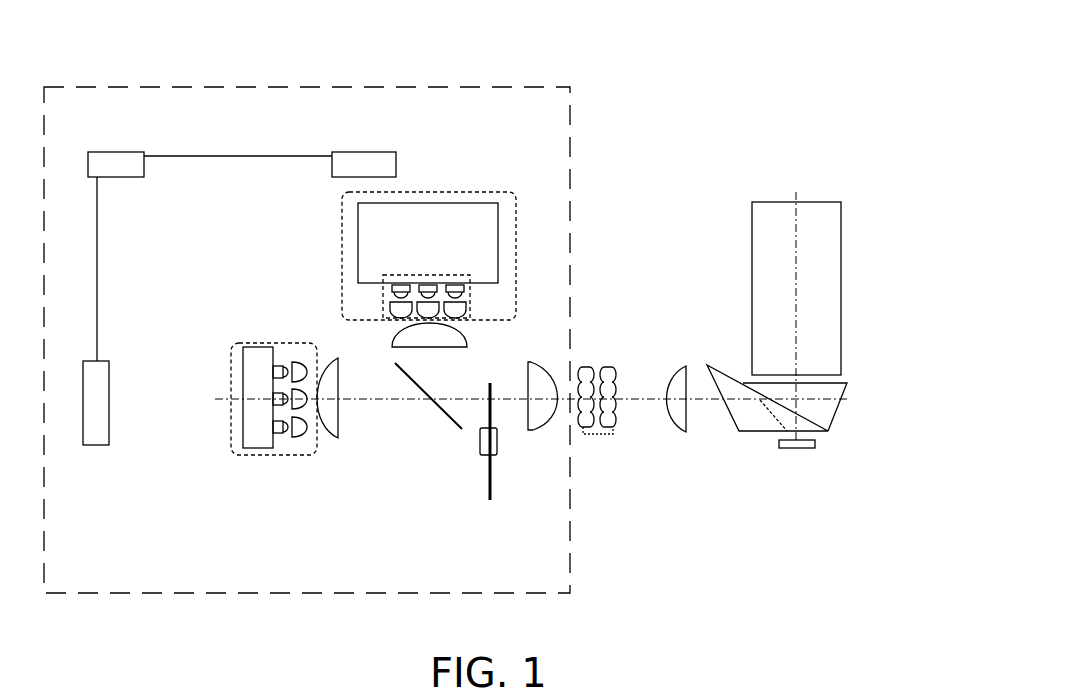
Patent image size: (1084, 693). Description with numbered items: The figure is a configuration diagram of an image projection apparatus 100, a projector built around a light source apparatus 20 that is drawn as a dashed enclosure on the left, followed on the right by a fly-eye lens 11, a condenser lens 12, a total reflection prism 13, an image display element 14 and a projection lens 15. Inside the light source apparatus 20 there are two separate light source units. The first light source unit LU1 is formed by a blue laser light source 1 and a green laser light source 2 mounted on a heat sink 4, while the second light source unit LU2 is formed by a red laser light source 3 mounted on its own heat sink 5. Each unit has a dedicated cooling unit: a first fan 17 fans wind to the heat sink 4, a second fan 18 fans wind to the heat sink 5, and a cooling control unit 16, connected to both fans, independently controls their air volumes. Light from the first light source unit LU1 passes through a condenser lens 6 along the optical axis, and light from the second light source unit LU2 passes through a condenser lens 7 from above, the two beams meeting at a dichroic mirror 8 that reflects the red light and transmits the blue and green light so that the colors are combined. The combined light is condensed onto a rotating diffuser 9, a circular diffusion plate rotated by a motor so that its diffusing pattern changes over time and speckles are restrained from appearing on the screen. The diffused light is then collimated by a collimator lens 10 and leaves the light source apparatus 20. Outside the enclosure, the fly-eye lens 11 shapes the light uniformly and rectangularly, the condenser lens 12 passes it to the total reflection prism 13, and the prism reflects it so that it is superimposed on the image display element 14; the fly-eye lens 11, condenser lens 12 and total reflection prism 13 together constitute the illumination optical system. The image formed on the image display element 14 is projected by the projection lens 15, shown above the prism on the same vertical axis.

The blue laser light source 1 is at (237, 405).
The green laser light source 2 is at (273, 370).
The red laser light source 3 is at (383, 297).
The heat sink 4 is at (258, 348).
The heat sink 5 is at (382, 212).
The condenser lens 6 is at (336, 358).
The condenser lens 7 is at (470, 345).
The dichroic mirror 8 is at (440, 417).
The rotating diffuser 9 is at (490, 500).
The collimator lens 10 is at (540, 430).
The fly-eye lens 11 is at (598, 434).
The condenser lens 12 is at (686, 366).
The total reflection prism 13 is at (738, 432).
The image display element 14 is at (815, 448).
The projection lens 15 is at (842, 290).
The cooling control unit 16 is at (112, 152).
The first fan 17 is at (96, 445).
The second fan 18 is at (342, 151).
The light source apparatus 20 is at (386, 87).
The image projection apparatus 100 is at (963, 153).
The first light source unit LU1 is at (305, 457).
The second light source unit LU2 is at (415, 192).